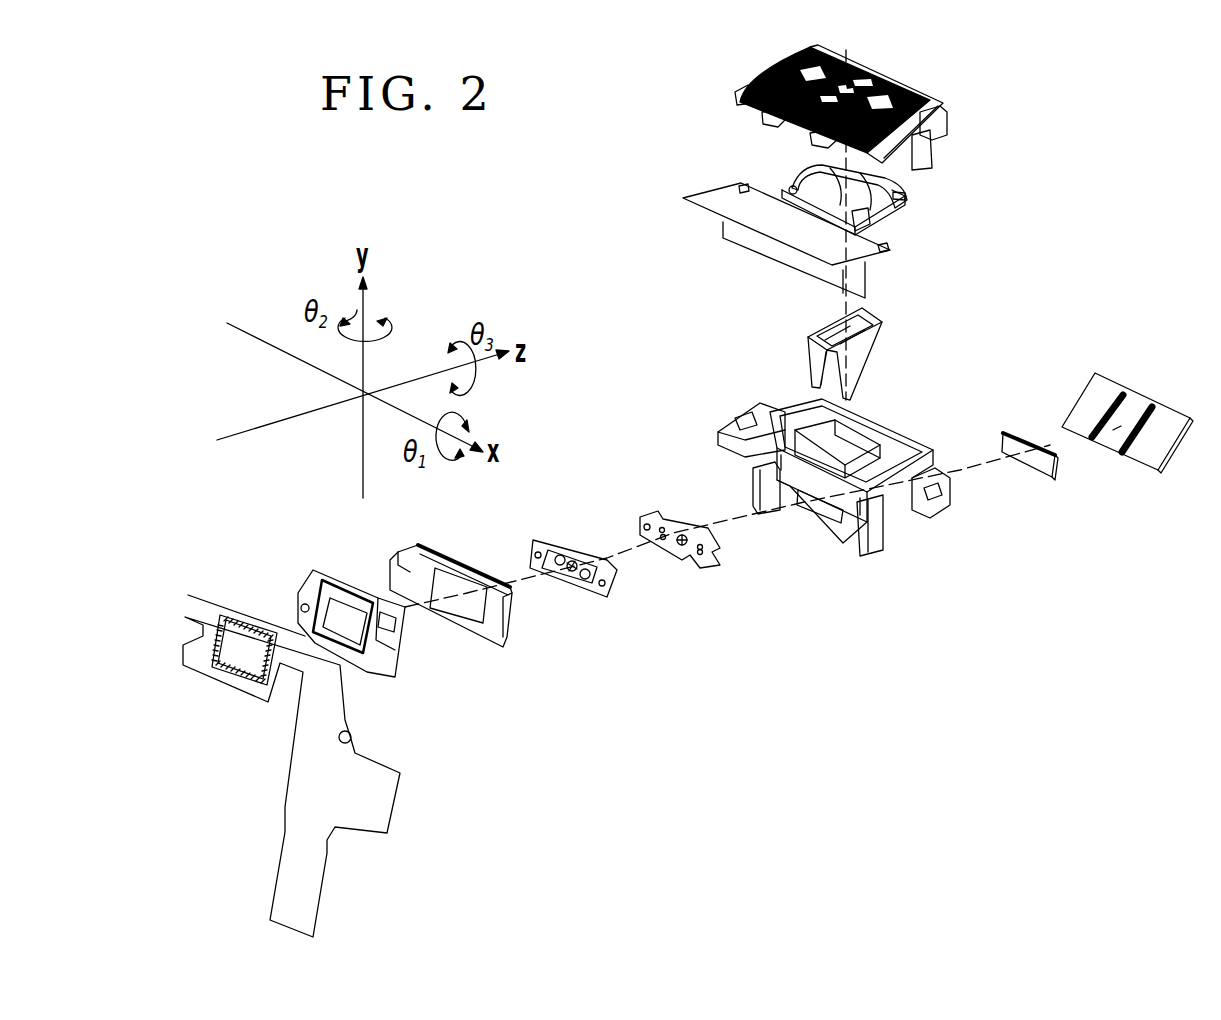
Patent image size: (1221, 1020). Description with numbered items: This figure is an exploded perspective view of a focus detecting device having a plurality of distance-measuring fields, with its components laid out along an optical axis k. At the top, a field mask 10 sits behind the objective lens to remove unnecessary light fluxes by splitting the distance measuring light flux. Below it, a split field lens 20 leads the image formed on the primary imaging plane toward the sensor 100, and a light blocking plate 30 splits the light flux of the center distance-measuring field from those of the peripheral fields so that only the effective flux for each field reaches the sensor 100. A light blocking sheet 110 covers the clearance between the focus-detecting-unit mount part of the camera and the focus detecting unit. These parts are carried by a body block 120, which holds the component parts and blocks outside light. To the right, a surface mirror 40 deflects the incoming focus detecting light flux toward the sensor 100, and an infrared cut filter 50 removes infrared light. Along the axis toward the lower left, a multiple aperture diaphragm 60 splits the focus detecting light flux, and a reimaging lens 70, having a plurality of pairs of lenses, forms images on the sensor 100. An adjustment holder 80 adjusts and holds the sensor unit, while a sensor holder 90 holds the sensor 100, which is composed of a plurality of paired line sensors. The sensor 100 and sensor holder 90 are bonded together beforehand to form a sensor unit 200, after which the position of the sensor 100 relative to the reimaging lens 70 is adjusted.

The field mask 10 is at (922, 158).
The split field lens 20 is at (907, 222).
The light blocking plate 30 is at (882, 340).
The surface mirror 40 is at (1162, 418).
The infrared cut filter 50 is at (1025, 440).
The multiple aperture diaphragm 60 is at (648, 520).
The reimaging lens 70 is at (536, 538).
The adjustment holder 80 is at (420, 545).
The sensor holder 90 is at (307, 577).
The sensor 100 is at (232, 638).
The light blocking sheet 110 is at (780, 257).
The body block 120 is at (905, 447).
The sensor unit 200 is at (423, 668).
The optical axis k is at (733, 530).